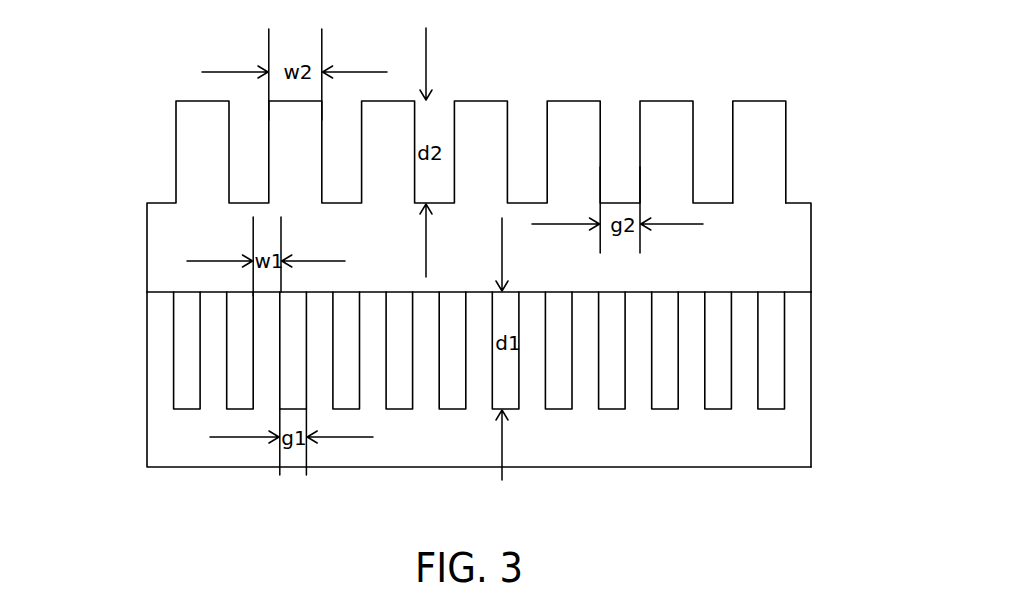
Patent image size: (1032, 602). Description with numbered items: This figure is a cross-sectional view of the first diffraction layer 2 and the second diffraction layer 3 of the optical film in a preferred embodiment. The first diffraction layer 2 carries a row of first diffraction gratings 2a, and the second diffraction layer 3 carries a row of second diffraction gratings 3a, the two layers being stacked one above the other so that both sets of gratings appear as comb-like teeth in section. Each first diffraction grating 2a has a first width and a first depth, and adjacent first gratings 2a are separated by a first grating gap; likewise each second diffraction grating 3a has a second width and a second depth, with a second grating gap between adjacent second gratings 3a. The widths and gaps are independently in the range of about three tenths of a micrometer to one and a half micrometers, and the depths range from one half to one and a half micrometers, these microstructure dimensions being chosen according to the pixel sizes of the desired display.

The first diffraction layer 2 is at (476, 379).
The first diffraction grating 2a is at (798, 348).
The second diffraction layer 3 is at (464, 196).
The second diffraction grating 3a is at (752, 145).